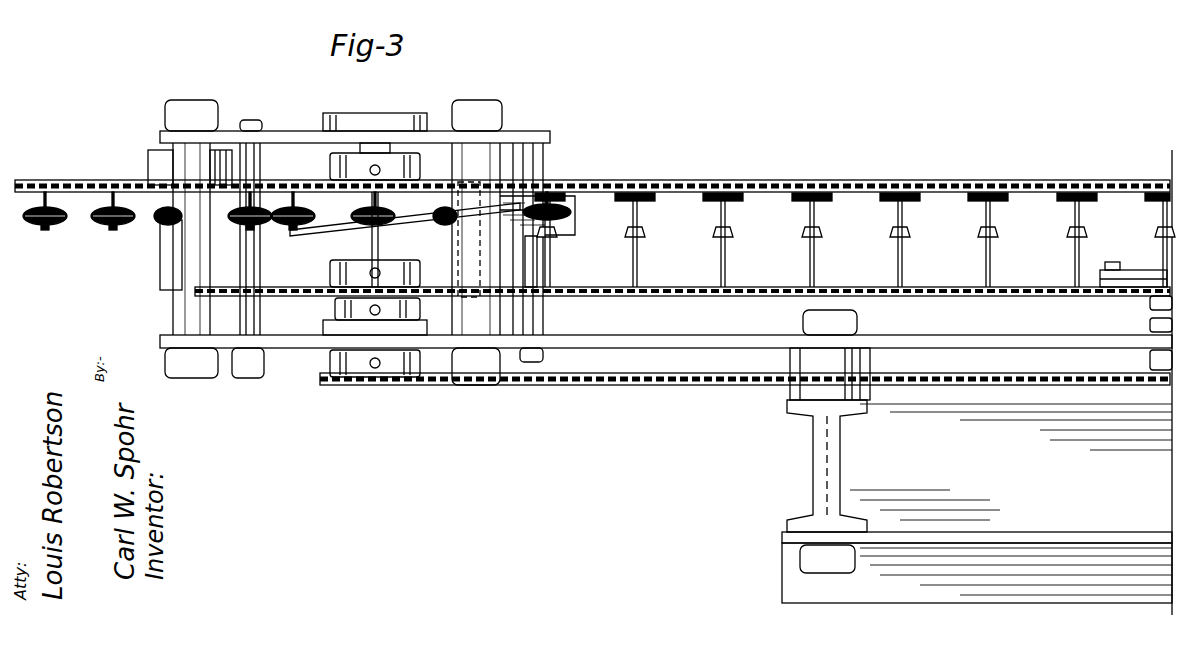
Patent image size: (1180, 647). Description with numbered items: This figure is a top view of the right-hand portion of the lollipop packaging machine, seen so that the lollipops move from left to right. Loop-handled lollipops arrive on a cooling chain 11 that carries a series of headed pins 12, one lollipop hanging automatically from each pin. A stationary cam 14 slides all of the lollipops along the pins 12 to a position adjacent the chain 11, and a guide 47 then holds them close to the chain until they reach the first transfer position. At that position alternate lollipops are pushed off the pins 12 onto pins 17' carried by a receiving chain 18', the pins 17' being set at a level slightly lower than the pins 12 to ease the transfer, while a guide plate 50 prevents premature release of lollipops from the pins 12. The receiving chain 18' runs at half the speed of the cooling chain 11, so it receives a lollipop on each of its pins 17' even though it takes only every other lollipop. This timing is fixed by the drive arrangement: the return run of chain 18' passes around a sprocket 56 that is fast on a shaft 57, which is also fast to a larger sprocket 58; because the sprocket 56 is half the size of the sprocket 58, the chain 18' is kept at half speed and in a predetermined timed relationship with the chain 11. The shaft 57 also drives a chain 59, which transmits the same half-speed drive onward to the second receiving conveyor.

The cooling chain 11 is at (67, 180).
The headed pins 12 is at (46, 200).
The stationary cam 14 is at (551, 235).
The pins 17' is at (856, 244).
The receiving chain 18' is at (682, 281).
The guide 47 is at (600, 205).
The guide plate 50 is at (1145, 240).
The sprocket 56 is at (430, 275).
The shaft 57 is at (366, 245).
The sprocket 58 is at (392, 190).
The chain 59 is at (425, 386).